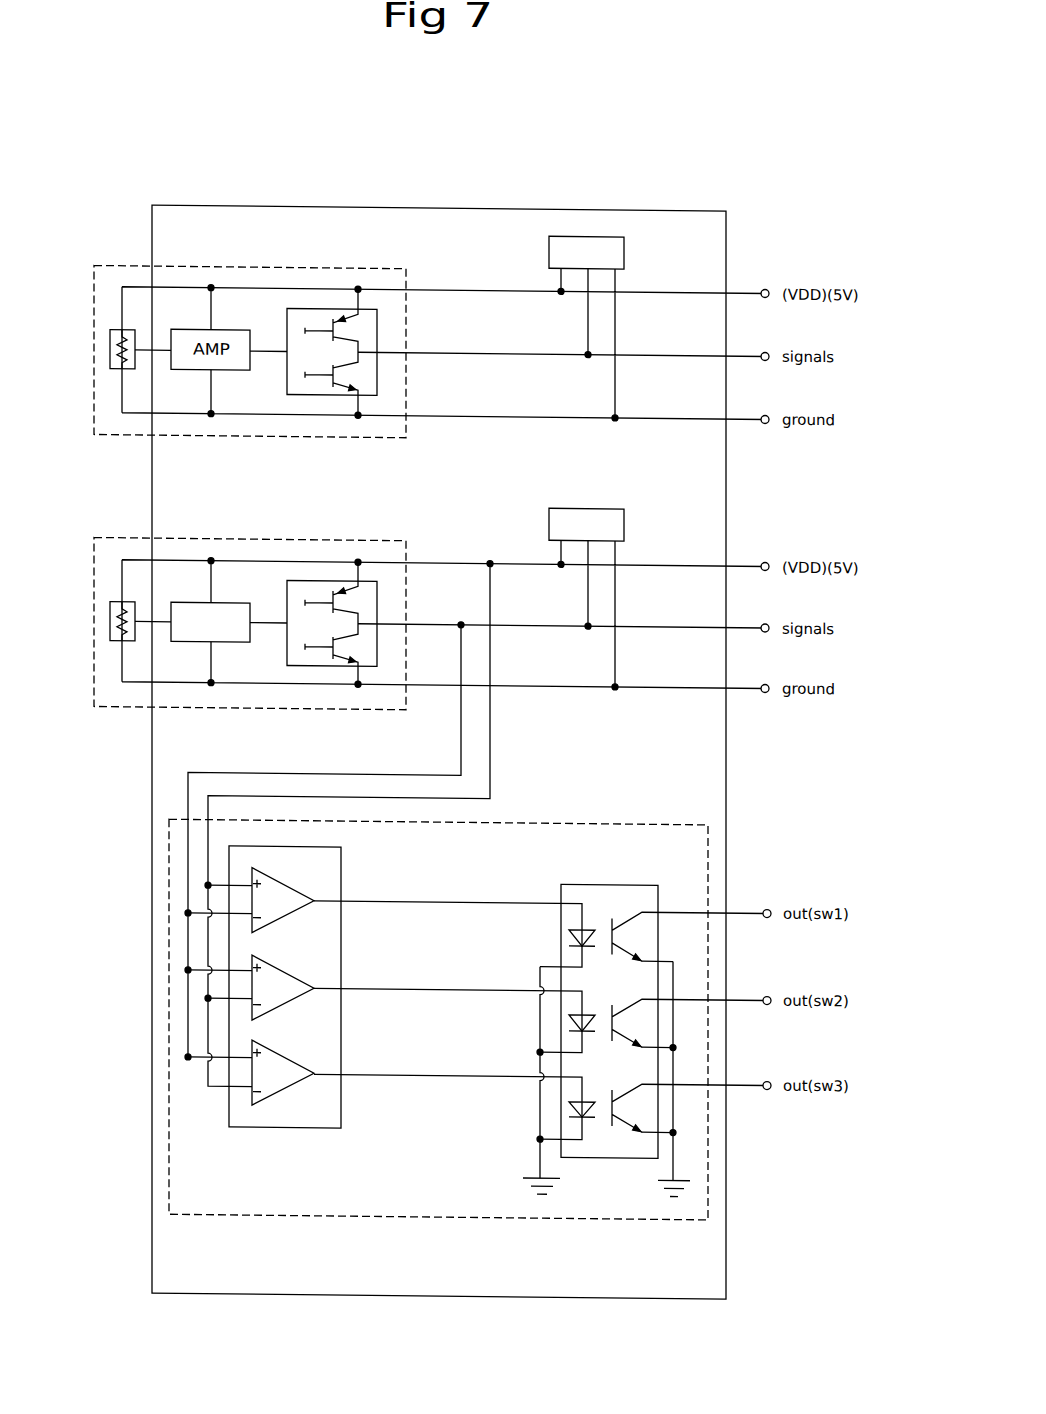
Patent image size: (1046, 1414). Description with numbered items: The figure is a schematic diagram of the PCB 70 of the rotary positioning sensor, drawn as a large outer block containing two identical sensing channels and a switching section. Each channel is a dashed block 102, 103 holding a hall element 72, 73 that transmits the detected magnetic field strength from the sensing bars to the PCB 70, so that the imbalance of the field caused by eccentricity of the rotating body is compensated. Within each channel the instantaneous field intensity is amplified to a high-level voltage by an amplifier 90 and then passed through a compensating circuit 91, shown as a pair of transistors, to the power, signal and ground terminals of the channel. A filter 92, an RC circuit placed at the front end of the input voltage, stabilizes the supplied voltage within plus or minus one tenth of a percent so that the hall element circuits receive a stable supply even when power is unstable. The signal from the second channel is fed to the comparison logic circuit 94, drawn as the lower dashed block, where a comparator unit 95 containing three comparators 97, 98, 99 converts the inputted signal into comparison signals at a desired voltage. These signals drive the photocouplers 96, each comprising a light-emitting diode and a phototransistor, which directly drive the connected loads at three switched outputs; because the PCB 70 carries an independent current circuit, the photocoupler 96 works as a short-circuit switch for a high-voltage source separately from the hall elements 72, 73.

The PCB 70 is at (726, 499).
The hall element 72 is at (118, 606).
The hall element 73 is at (118, 334).
The amplifier (AMP) 90 is at (173, 645).
The compensating circuit 91 is at (287, 668).
The filter 92 is at (624, 246).
The comparison logic circuit 94 is at (307, 1217).
The comparator 95 is at (319, 999).
The photocoupler 96 is at (612, 1156).
The comparator 97 is at (300, 894).
The comparator 98 is at (300, 981).
The comparator 99 is at (300, 1067).
The first sensor circuit 102 is at (406, 274).
The second sensor circuit 103 is at (406, 549).